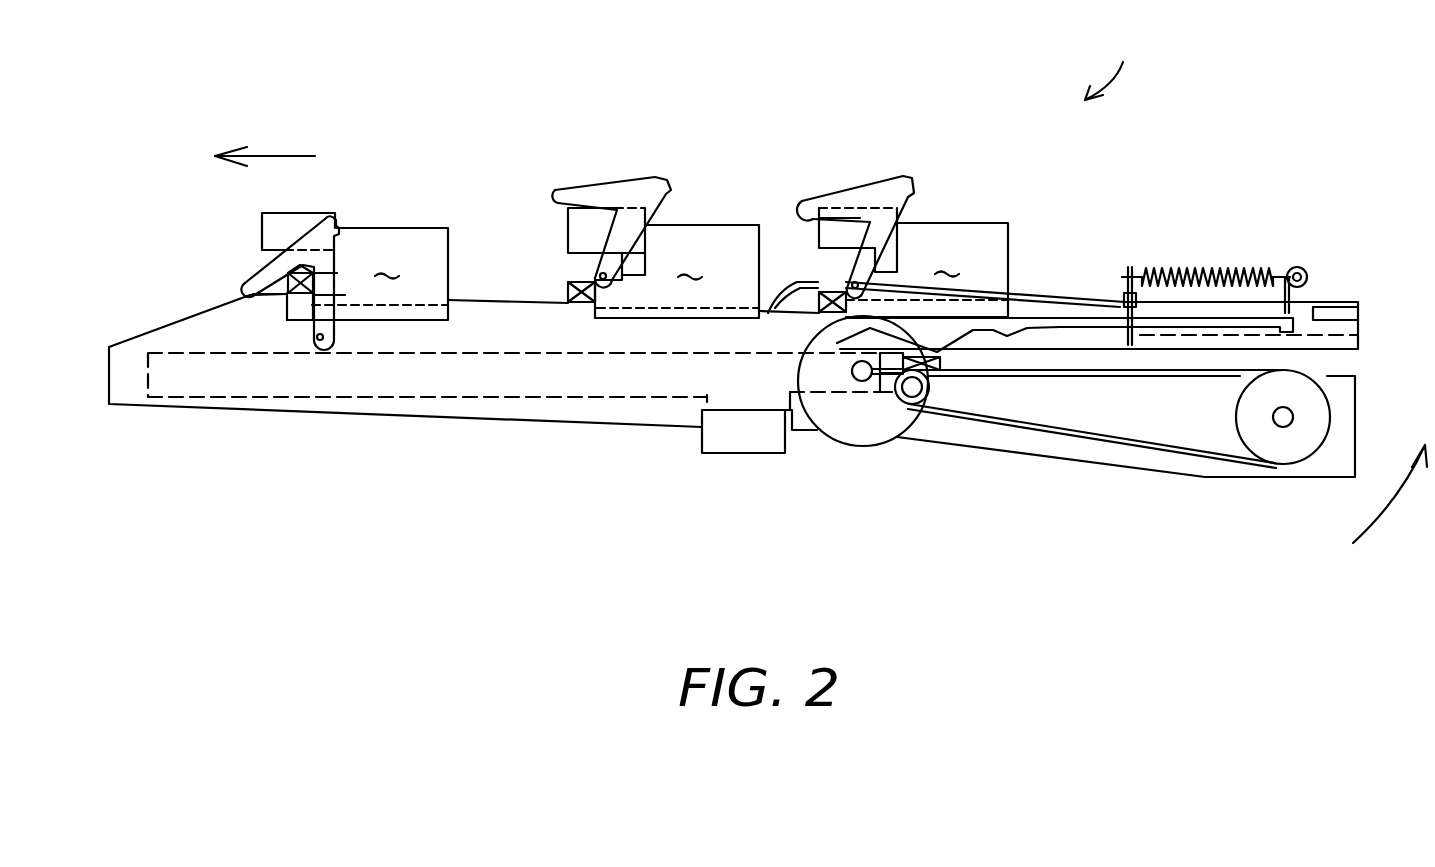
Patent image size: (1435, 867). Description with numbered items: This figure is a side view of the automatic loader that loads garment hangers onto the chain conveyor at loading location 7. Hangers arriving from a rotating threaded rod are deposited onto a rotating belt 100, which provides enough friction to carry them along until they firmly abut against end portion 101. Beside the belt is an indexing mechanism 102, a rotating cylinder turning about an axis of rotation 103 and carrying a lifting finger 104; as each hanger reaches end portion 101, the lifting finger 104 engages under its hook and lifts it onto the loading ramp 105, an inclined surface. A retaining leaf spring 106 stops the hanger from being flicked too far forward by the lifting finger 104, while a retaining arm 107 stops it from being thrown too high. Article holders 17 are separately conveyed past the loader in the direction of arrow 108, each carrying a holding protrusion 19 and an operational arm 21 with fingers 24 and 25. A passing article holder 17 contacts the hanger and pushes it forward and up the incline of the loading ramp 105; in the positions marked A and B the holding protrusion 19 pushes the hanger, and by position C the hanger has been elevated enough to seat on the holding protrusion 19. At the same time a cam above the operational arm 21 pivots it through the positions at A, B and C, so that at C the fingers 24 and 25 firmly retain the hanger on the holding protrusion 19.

The loading location 7 is at (1114, 64).
The article holder 17 is at (987, 223).
The holding protrusion 19 is at (593, 308).
The operational arm 21 is at (880, 175).
The finger 24 is at (803, 200).
The finger 25 is at (597, 270).
The rotating belt 100 is at (1185, 448).
The end portion 101 is at (800, 333).
The indexing mechanism 102 is at (870, 433).
The axis of rotation 103 is at (857, 375).
The lifting finger 104 is at (893, 405).
The loading ramp 105 is at (470, 302).
The retaining leaf spring 106 is at (1060, 297).
The retaining arm 107 is at (1170, 322).
The direction arrow 108 is at (283, 152).